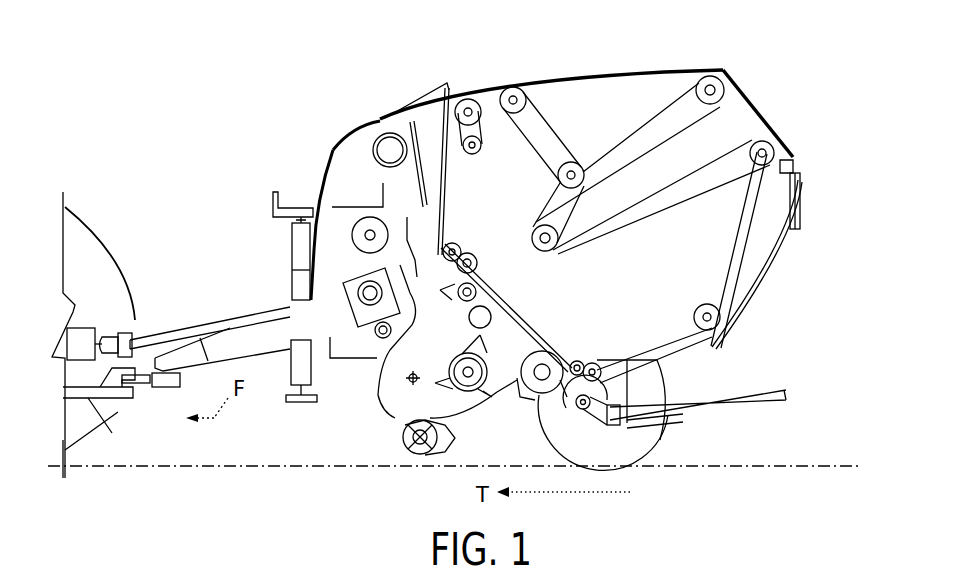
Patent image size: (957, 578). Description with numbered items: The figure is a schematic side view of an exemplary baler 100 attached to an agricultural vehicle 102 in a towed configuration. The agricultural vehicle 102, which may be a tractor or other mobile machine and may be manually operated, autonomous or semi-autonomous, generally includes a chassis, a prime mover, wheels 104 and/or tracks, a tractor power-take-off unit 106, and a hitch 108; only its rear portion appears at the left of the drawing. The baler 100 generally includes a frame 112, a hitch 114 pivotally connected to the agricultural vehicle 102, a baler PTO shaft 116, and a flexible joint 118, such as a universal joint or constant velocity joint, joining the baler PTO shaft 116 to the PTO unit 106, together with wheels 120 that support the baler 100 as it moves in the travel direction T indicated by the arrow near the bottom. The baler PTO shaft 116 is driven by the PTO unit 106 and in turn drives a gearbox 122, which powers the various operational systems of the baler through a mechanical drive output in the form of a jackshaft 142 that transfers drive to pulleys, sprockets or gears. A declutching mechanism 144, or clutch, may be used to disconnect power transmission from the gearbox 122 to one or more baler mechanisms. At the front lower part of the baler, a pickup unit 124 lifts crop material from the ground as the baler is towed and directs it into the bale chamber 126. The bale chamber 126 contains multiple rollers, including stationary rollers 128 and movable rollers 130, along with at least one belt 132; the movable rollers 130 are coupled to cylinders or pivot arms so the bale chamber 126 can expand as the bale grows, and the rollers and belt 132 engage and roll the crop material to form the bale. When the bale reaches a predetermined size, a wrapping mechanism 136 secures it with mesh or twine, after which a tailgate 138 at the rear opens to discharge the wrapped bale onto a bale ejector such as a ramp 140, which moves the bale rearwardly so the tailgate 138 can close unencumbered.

The baler 100 is at (338, 100).
The agricultural vehicle 102 is at (96, 190).
The wheels 104 is at (108, 248).
The tractor power-take-off (PTO) unit 106 is at (84, 327).
The hitch 108 is at (103, 423).
The frame 112 is at (407, 100).
The hitch 114 is at (160, 396).
The baler PTO shaft 116 is at (240, 322).
The flexible joint 118 is at (124, 332).
The wheels 120 is at (655, 438).
The gearbox 122 is at (335, 275).
The pickup unit 124 is at (394, 463).
The bale chamber 126 is at (622, 290).
The stationary rollers 128 is at (514, 88).
The movable rollers 130 is at (540, 226).
The belt 132 is at (498, 302).
The wrapping mechanism 136 is at (345, 158).
The tailgate 138 is at (815, 204).
The ramp 140 is at (748, 403).
The jackshaft 142 is at (363, 332).
The declutching mechanism 144 is at (305, 356).